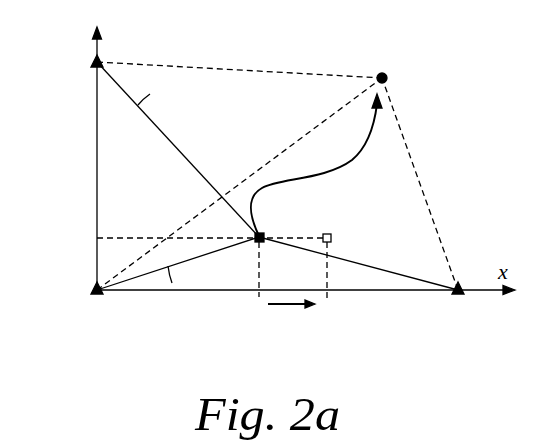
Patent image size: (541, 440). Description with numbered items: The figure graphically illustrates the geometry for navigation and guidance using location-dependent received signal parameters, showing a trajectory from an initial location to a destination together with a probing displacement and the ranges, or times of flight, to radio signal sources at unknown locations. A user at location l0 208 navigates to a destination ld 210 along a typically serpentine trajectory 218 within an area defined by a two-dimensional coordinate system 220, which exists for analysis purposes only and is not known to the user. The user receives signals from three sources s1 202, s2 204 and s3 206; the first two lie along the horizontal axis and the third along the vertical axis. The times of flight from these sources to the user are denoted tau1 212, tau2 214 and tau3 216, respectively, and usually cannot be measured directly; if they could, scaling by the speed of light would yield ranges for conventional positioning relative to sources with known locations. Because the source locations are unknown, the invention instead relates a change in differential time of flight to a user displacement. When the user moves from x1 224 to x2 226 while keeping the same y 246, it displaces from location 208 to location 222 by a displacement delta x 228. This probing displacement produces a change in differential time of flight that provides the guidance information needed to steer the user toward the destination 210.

The source s1 202 is at (62, 308).
The source s2 204 is at (445, 315).
The source s3 206 is at (62, 59).
The location l0 208 is at (263, 230).
The destination ld 210 is at (383, 73).
The time of flight tau1 212 is at (178, 263).
The time of flight tau2 214 is at (363, 263).
The time of flight tau3 216 is at (178, 149).
The trajectory 218 is at (370, 132).
The 2D coordinate system 220 is at (97, 142).
The displaced location 222 is at (328, 225).
The x coordinate x1 224 is at (250, 322).
The x coordinate x2 226 is at (328, 323).
The displacement delta x 228 is at (308, 340).
The y coordinate 246 is at (56, 242).